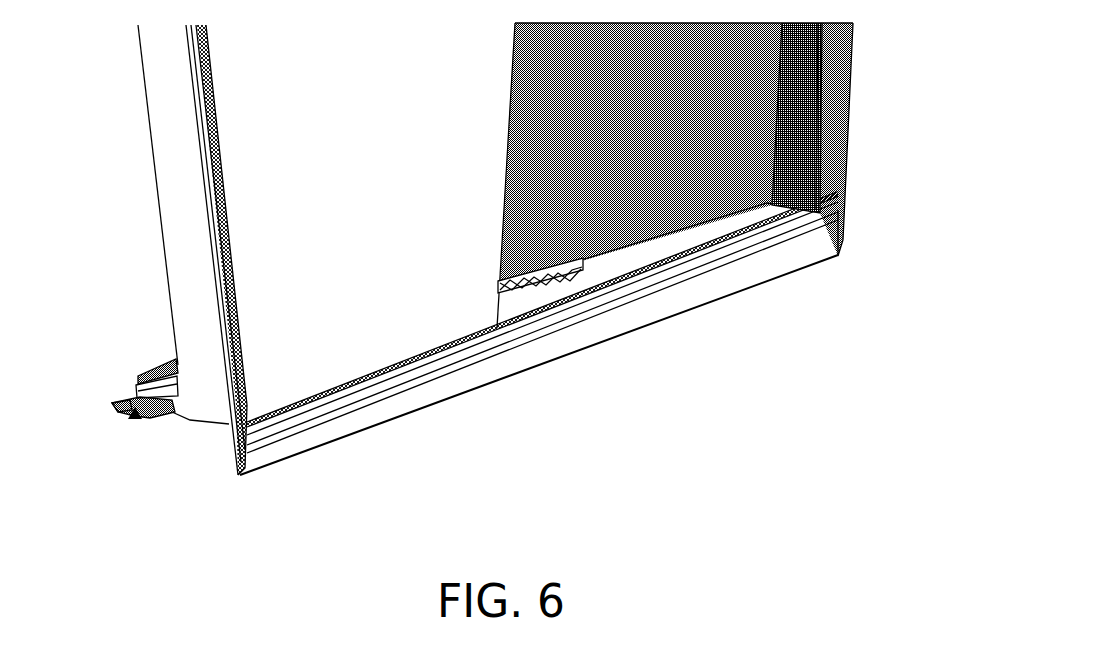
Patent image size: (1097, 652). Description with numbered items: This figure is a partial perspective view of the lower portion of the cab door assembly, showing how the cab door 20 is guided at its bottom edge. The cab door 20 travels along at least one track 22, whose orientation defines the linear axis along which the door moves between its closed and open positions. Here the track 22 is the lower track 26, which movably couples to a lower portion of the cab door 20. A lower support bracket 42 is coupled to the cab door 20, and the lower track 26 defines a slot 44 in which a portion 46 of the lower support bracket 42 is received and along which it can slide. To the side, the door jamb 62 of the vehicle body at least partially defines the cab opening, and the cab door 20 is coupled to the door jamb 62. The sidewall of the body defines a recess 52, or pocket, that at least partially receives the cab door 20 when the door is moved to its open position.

The cab door 20 is at (382, 315).
The track 22 is at (130, 407).
The lower track 26 is at (183, 417).
The lower support bracket 42 is at (162, 366).
The slot 44 is at (137, 419).
The portion of the lower support bracket 46 is at (127, 400).
The recess 52 is at (657, 192).
The door jamb 62 is at (833, 157).